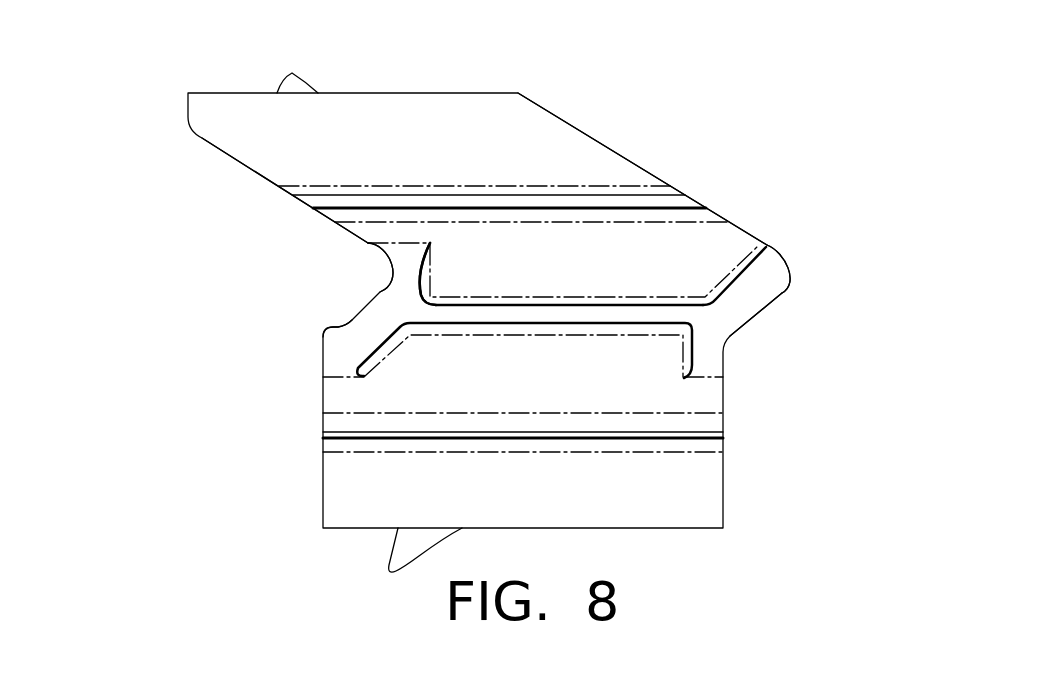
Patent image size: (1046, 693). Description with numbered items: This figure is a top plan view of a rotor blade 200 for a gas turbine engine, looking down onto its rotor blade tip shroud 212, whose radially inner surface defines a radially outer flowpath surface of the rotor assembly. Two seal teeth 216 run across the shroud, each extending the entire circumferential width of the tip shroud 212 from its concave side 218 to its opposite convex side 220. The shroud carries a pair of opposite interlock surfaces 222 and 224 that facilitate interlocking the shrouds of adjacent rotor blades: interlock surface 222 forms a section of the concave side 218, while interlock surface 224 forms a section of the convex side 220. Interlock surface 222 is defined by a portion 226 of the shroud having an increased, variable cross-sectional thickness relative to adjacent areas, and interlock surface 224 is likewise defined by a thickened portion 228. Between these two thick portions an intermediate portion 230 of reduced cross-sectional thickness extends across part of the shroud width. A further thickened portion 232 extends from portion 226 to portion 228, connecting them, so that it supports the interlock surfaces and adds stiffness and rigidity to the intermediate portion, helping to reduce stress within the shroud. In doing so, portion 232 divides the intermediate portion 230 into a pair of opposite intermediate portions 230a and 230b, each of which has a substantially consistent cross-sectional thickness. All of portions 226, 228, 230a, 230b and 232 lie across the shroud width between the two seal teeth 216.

The rotor blade 200 is at (220, 60).
The rotor blade tip shroud 212 is at (618, 150).
The seal teeth 216 is at (662, 202).
The concave side 218 is at (317, 263).
The convex side 220 is at (793, 243).
The interlock surface 222 is at (347, 315).
The interlock surface 224 is at (768, 308).
The portion of tip shroud 226 is at (353, 333).
The portion of tip shroud 228 is at (742, 292).
The intermediate portion 230 is at (512, 268).
The intermediate portion 230a is at (553, 368).
The intermediate portion 230b is at (588, 263).
The portion of tip shroud 232 is at (445, 312).